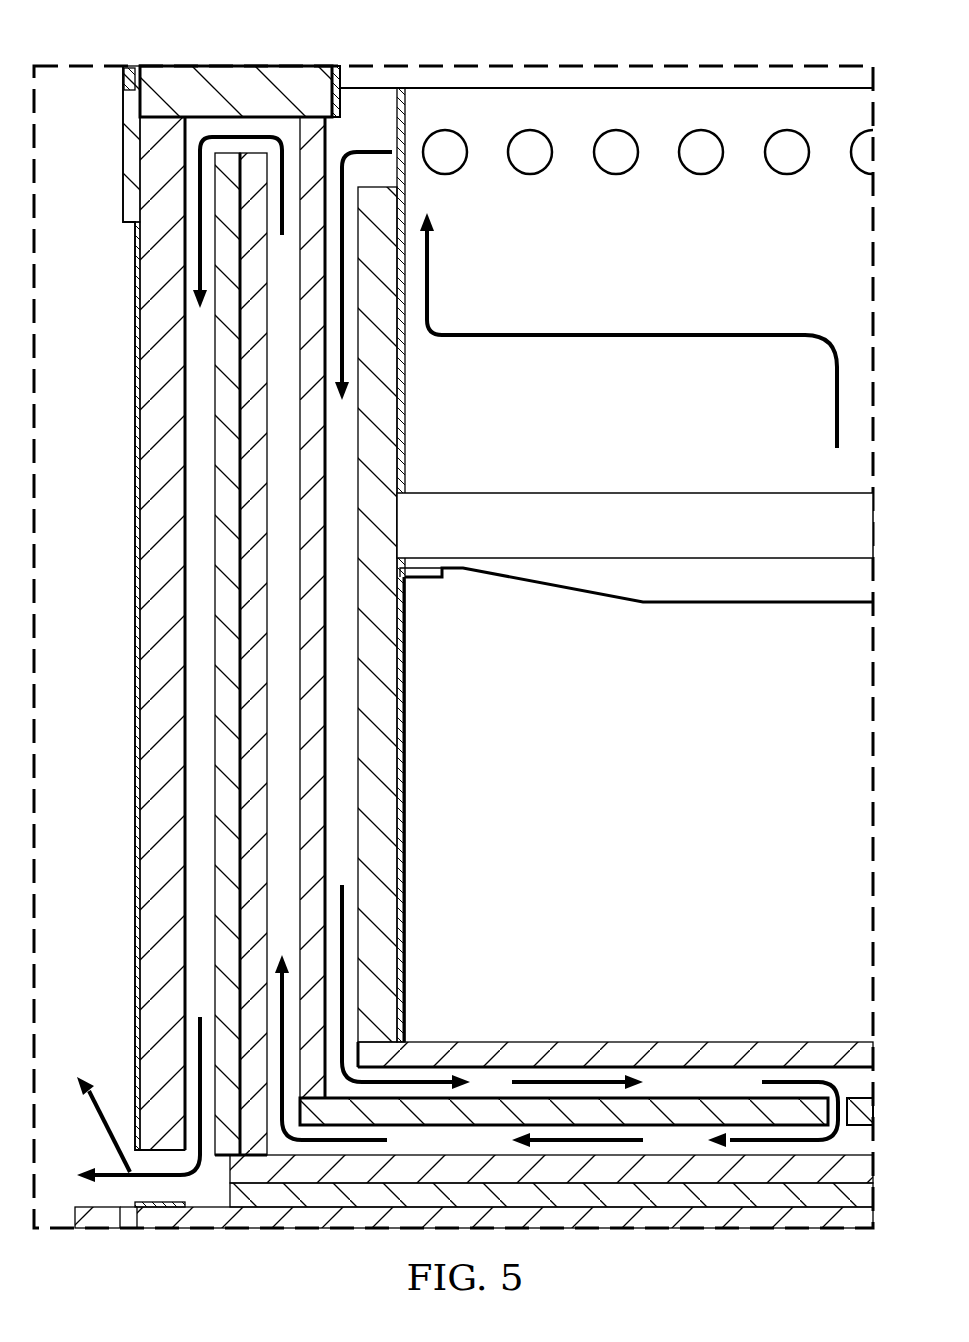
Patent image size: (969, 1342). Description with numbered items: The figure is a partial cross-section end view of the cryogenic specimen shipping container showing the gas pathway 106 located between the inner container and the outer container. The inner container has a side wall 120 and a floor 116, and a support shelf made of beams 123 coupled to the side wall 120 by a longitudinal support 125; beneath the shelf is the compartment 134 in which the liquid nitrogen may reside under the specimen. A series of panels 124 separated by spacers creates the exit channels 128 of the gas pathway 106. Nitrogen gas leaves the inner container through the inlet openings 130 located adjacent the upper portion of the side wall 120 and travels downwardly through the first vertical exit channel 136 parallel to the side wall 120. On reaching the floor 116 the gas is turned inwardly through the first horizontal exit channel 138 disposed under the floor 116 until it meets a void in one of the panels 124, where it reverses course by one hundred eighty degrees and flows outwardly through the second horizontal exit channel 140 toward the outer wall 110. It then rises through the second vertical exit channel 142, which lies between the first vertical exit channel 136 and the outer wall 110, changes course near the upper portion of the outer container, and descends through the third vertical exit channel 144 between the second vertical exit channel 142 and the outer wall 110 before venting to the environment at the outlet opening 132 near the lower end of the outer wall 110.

The gas pathway 106 is at (418, 128).
The side walls 110 is at (135, 262).
The floor 116 is at (797, 1042).
The side walls 120 is at (405, 868).
The beams 123 is at (617, 493).
The panels 124 is at (230, 163).
The longitudinal supports 125 is at (413, 577).
The exit channels 128 is at (377, 150).
The inlet openings 130 is at (400, 162).
The outlet openings 132 is at (122, 1188).
The compartment 134 is at (616, 839).
The first vertical exit channel 136 is at (340, 687).
The first horizontal exit channel 138 is at (483, 1085).
The second horizontal exit channel 140 is at (678, 1142).
The second vertical exit channel 142 is at (282, 804).
The third vertical exit channel 144 is at (200, 517).